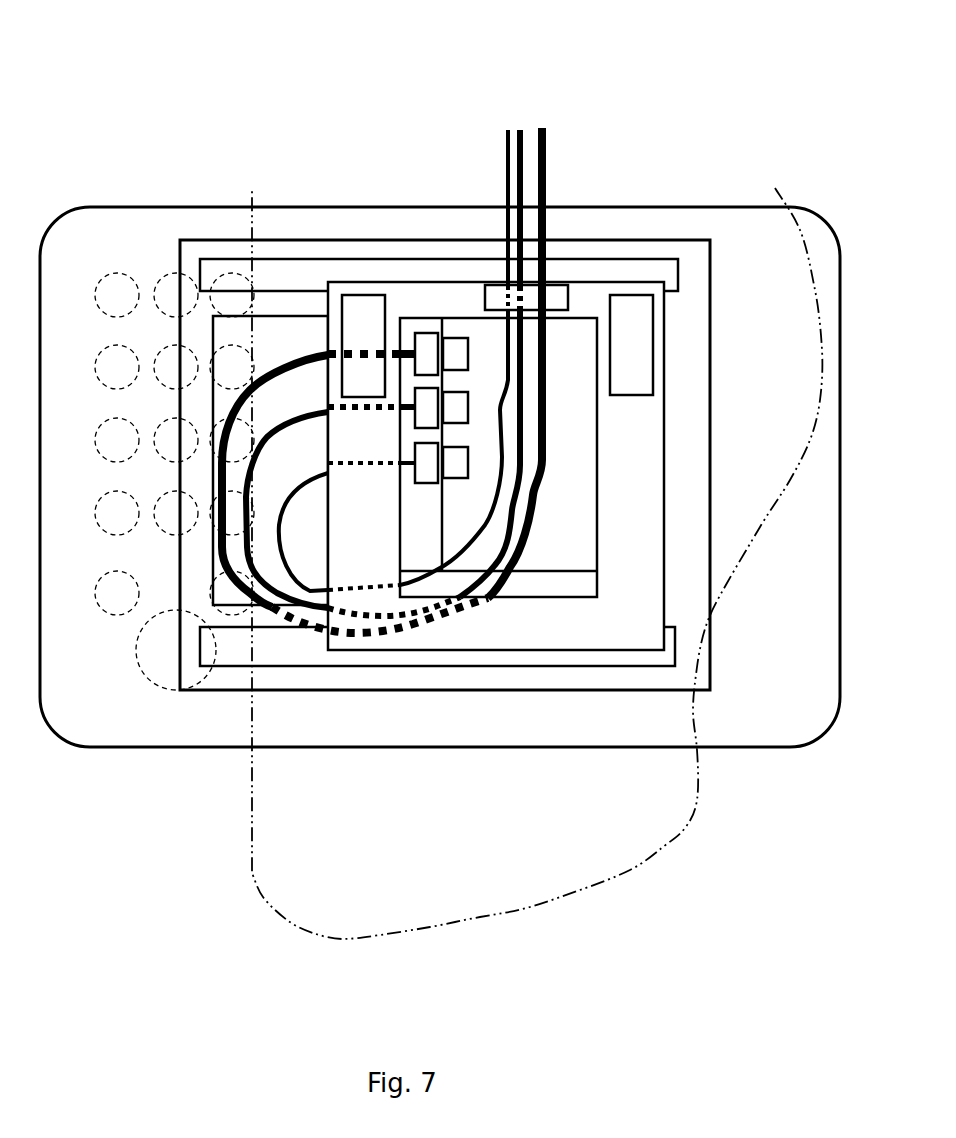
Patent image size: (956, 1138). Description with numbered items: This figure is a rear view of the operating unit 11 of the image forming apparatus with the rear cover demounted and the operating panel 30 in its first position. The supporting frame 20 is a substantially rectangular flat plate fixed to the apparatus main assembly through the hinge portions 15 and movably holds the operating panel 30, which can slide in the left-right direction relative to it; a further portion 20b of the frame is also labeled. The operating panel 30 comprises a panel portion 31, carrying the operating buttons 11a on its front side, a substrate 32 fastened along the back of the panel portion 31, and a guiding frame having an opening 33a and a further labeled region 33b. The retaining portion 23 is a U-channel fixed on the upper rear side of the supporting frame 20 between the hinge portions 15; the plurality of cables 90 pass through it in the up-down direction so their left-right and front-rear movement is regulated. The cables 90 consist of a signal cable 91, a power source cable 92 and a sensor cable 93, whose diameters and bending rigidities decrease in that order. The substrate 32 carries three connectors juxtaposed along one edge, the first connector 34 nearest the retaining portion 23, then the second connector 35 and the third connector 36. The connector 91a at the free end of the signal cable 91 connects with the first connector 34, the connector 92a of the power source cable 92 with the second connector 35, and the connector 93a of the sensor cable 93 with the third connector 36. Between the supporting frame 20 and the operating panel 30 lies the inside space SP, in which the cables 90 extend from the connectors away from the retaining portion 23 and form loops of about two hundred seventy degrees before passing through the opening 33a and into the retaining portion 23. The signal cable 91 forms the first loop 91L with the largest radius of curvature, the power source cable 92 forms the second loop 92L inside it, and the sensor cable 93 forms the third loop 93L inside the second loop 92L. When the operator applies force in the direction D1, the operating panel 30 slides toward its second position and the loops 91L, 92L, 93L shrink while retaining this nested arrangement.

The operating unit 11 is at (100, 76).
The operating buttons 11a is at (113, 275).
The operating panel 30 is at (715, 186).
The panel portion 31 is at (762, 742).
The supporting frame 20 is at (688, 498).
The board lower portion 20b is at (530, 587).
The opening of the guide frame 33a is at (277, 263).
The recess portion 33b is at (226, 338).
The inside space SP is at (217, 404).
The substrate 32 is at (588, 555).
The hinge portion 15 is at (362, 302).
The retaining portion 23 is at (567, 297).
The first connector 34 is at (463, 352).
The second connector 35 is at (463, 408).
The third connector 36 is at (463, 463).
The plurality of cables 90 is at (423, 321).
The signal cable 91 is at (465, 63).
The power source cable 92 is at (525, 143).
The sensor cable 93 is at (507, 148).
The connector of the signal cable 91a is at (417, 340).
The connector of the power source cable 92a is at (415, 418).
The connector of the sensor cable 93a is at (420, 475).
The first loop 91L is at (273, 376).
The second loop 92L is at (270, 430).
The third loop 93L is at (288, 497).
The direction D1 is at (105, 839).